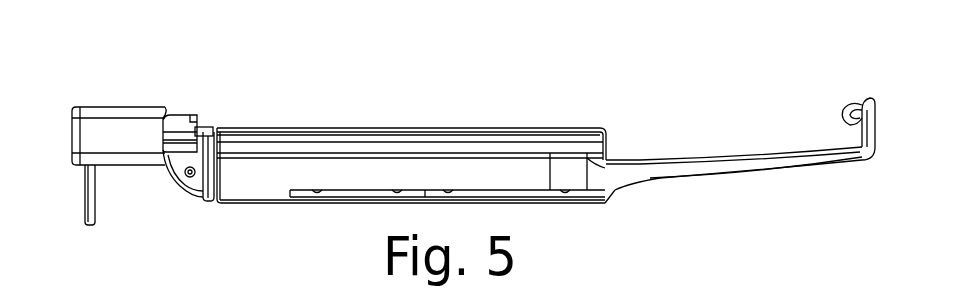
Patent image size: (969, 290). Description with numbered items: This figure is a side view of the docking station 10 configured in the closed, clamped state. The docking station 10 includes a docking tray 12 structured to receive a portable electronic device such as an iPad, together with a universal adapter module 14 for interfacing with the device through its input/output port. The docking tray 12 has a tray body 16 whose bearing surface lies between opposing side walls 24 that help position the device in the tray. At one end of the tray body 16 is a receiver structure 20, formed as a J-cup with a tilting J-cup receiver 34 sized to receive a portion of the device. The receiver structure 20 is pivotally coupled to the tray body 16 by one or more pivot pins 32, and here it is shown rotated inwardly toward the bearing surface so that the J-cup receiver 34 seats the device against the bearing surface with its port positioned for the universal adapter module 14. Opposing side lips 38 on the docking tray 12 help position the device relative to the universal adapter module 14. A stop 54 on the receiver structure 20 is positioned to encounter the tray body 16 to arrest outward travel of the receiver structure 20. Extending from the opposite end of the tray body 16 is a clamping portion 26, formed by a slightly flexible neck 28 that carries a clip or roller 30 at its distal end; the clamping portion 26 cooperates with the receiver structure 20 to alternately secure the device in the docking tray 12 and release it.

The docking station 10 is at (380, 128).
The docking tray 12 is at (267, 203).
The universal adapter module 14 is at (115, 145).
The tray body 16 is at (244, 186).
The receiver structure 20 is at (176, 120).
The side walls 24 is at (504, 130).
The clamping portion 26 is at (800, 166).
The flexible neck 28 is at (780, 156).
The clip or roller 30 is at (848, 109).
The pivot pins 32 is at (185, 182).
The J-cup receiver 34 is at (178, 150).
The side lips 38 is at (205, 127).
The stop 54 is at (206, 204).